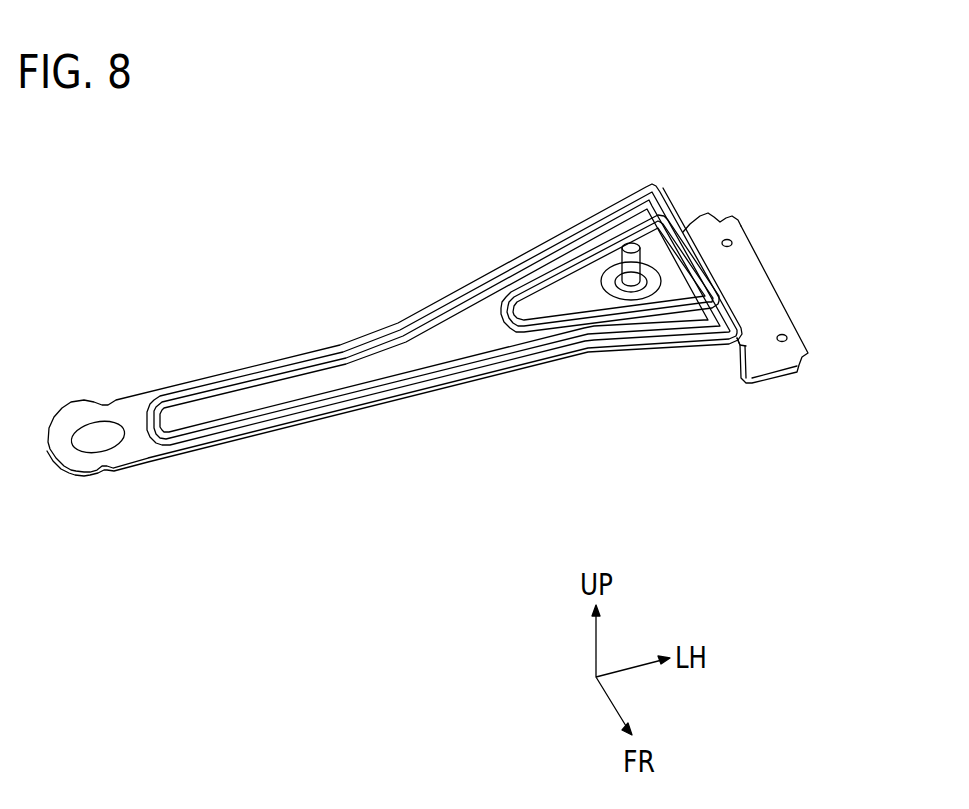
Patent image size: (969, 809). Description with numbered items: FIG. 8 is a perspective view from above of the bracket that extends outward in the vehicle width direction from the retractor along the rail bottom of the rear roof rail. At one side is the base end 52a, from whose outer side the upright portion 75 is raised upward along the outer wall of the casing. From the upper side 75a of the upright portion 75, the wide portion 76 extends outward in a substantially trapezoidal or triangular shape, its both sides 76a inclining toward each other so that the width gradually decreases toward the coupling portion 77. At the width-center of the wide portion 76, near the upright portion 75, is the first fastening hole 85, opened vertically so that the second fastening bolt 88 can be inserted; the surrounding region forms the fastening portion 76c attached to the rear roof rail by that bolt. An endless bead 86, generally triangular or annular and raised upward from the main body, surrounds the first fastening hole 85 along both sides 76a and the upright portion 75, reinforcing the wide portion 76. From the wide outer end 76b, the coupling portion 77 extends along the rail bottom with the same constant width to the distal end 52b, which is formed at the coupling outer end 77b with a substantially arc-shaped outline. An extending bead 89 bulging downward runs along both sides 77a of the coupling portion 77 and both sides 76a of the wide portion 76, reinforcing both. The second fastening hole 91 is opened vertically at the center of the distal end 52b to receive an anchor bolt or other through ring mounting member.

The wide portion 76 is at (532, 238).
The both sides of the wide portion 76a is at (493, 255).
The wide outer end 76b is at (407, 360).
The fastening portion 76c is at (651, 250).
The coupling portion 77 is at (292, 354).
The both sides of the coupling portion 77a is at (228, 364).
The coupling outer end 77b is at (138, 427).
The base end 52a is at (763, 312).
The distal end 52b is at (75, 420).
The second fastening hole 91 is at (98, 442).
The extending bead 89 is at (335, 395).
The second fastening bolt 88 is at (603, 276).
The first fastening hole 85 is at (625, 263).
The bead 86 is at (601, 242).
The upright portion 75 is at (736, 356).
The upper side of the upright portion 75a is at (684, 232).